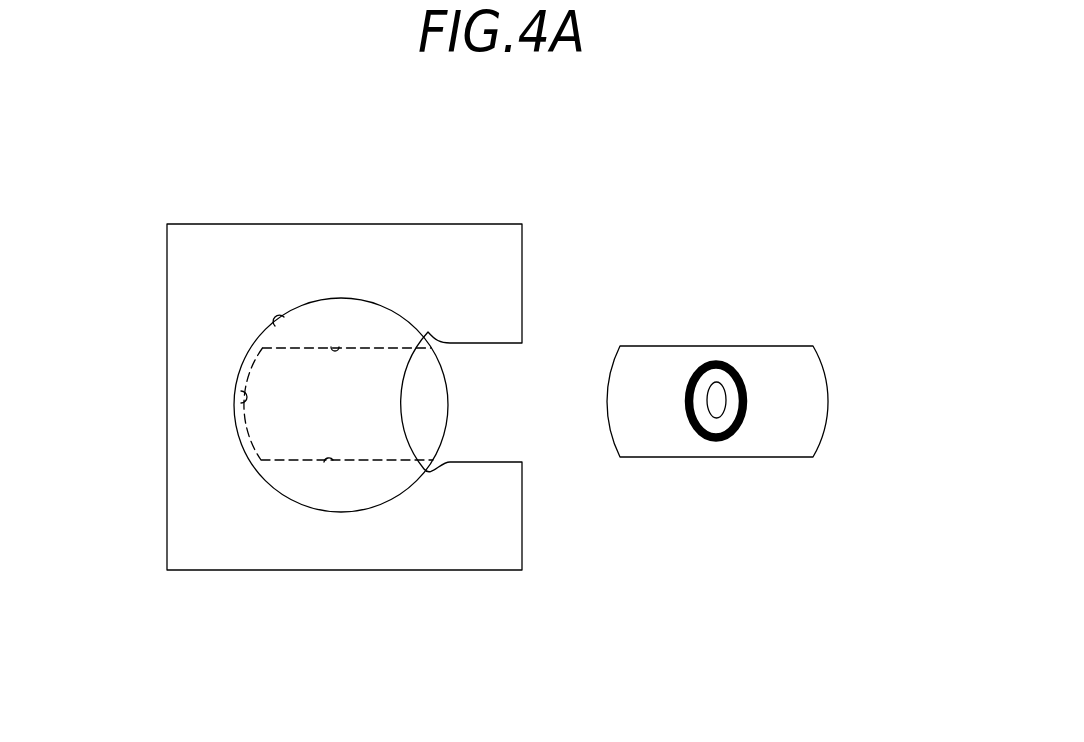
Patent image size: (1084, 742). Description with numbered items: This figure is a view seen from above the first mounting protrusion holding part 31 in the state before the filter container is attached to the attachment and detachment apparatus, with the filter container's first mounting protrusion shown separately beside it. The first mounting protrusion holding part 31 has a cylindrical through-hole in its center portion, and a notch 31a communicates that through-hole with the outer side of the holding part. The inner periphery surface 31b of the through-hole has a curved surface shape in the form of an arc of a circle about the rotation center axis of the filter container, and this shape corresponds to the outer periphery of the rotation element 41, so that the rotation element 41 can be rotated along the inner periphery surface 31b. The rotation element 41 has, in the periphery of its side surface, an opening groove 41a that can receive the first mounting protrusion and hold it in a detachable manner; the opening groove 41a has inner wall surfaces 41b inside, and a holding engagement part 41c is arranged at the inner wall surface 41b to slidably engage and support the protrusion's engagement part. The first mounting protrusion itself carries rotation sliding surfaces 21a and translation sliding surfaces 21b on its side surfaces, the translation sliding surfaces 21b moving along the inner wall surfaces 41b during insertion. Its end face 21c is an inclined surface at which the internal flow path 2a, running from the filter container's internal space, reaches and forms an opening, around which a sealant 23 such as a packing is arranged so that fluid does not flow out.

The first mounting protrusion holding part 31 is at (392, 255).
The notch 31a is at (492, 390).
The inner periphery surface 31b is at (283, 318).
The rotation element 41 is at (390, 300).
The opening groove 41a is at (448, 418).
The inner wall surfaces 41b is at (335, 347).
The holding engagement part 41c is at (250, 392).
The rotation sliding surfaces 21a is at (827, 402).
The translation sliding surfaces 21b is at (783, 347).
The end face 21c is at (678, 367).
The internal flow path 2a is at (715, 412).
The sealant 23 is at (718, 427).